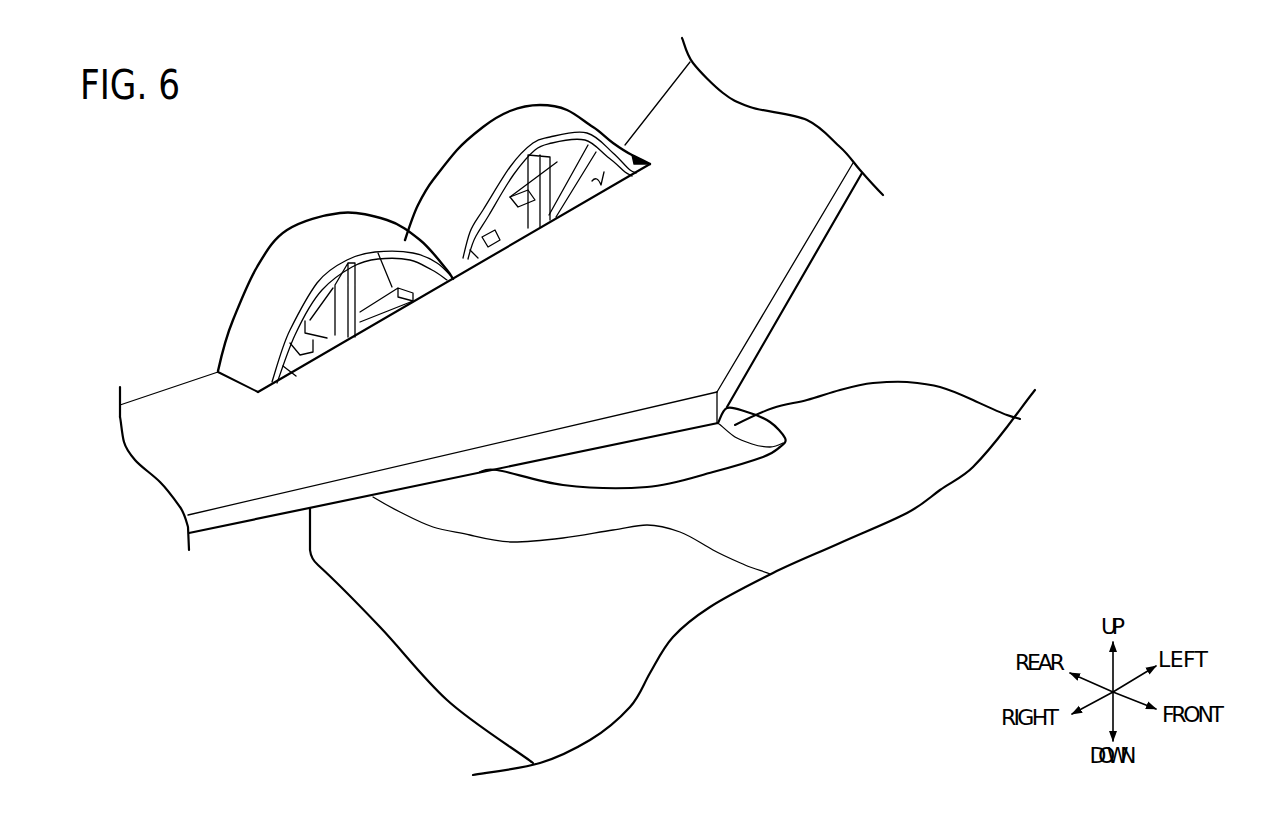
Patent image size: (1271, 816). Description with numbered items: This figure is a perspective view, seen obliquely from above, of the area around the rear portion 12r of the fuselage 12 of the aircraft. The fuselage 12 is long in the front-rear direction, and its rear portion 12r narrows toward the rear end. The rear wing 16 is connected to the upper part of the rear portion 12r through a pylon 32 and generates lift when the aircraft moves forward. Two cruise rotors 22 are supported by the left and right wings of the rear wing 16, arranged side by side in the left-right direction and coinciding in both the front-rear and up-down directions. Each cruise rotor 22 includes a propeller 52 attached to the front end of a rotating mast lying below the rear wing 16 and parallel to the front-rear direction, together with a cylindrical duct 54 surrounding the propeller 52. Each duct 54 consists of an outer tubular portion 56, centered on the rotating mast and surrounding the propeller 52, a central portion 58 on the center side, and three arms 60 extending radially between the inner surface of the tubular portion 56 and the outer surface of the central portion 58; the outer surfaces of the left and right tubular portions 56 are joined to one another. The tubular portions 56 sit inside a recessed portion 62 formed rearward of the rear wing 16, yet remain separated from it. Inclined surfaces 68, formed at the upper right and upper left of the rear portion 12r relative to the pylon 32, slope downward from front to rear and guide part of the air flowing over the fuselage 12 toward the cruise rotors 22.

The rear portion 12r is at (930, 400).
The fuselage 12 is at (765, 564).
The rear wing 16 is at (236, 525).
The cruise rotor 22 is at (217, 309).
The pylon 32 is at (750, 427).
The propeller 52 is at (392, 300).
The duct 54 is at (305, 170).
The tubular portion 56 is at (323, 232).
The central portion 58 is at (292, 325).
The arm 60 is at (347, 283).
The recessed portion 62 is at (598, 184).
The inclined surface 68 is at (460, 513).